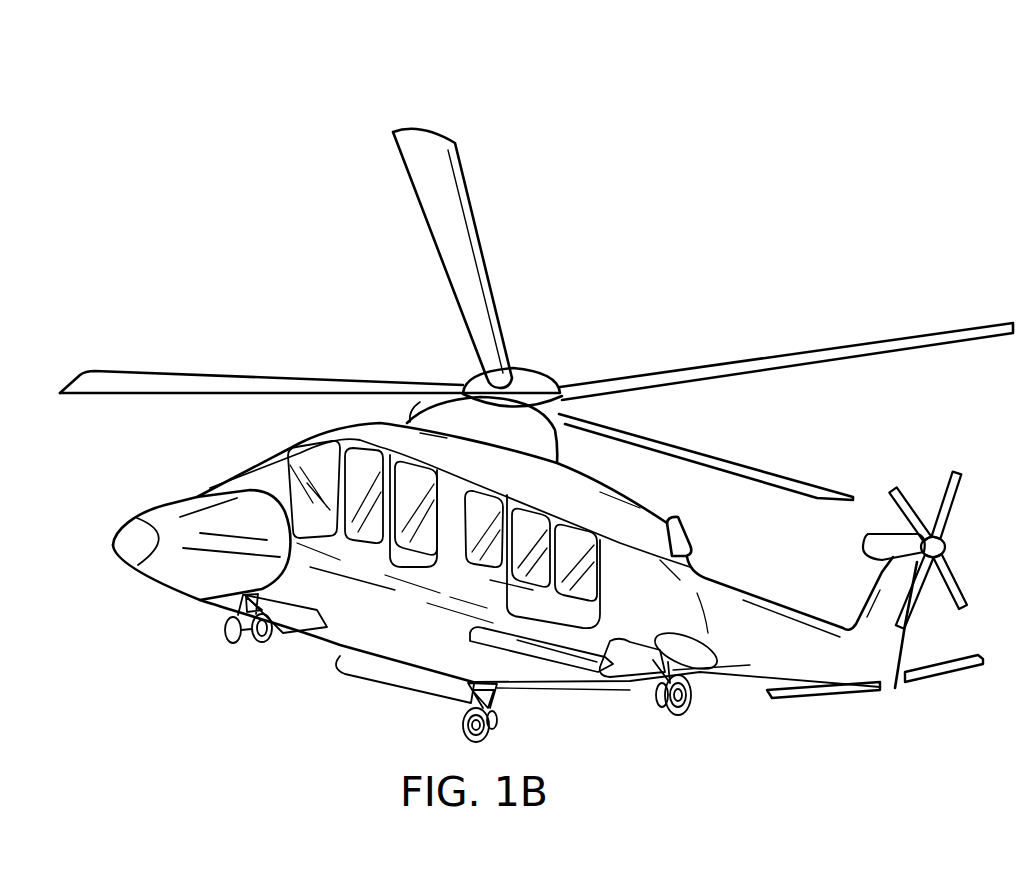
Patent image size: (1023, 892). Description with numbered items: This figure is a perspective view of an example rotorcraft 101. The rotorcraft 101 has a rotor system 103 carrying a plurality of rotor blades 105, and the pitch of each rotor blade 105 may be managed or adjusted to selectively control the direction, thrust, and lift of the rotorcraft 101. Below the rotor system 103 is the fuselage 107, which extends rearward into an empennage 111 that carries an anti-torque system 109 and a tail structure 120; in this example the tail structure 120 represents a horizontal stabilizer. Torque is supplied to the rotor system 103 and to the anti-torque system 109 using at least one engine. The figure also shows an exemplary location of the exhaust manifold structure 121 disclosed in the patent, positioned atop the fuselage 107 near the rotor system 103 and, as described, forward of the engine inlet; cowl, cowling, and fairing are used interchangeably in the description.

The rotorcraft 101 is at (536, 403).
The rotor system 103 is at (536, 314).
The rotor blades 105 is at (768, 369).
The fuselage 107 is at (333, 640).
The anti-torque system 109 is at (932, 457).
The empennage 111 is at (745, 665).
The tail structure 120 is at (940, 667).
The exhaust manifold structure 121 is at (406, 420).